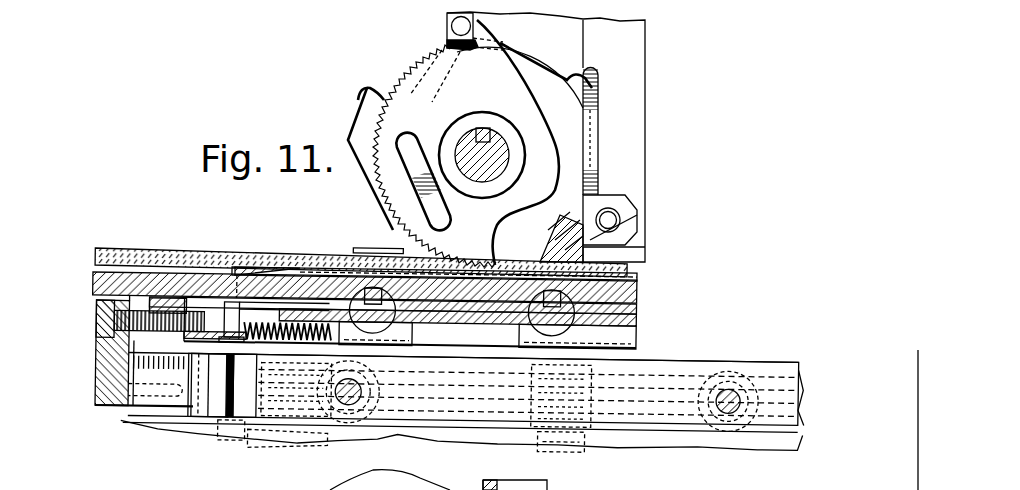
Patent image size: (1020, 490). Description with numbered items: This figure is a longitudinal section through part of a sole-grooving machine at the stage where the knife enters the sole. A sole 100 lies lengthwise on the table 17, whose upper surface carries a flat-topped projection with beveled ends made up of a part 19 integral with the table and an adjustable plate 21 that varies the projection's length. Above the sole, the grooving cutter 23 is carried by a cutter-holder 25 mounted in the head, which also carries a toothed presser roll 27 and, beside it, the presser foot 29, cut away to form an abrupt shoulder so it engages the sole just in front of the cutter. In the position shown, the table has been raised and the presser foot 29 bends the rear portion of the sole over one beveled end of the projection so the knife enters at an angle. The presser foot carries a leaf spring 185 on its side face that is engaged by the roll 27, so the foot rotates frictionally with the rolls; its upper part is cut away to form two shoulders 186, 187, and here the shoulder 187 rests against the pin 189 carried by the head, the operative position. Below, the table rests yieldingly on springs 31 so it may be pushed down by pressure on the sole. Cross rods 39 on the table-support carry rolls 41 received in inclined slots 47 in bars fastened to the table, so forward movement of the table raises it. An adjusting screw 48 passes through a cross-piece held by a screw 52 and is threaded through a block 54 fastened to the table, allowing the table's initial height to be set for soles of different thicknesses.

The table 17 is at (93, 277).
The part of projection integral with the table 19 is at (290, 277).
The adjustable plate 21 is at (350, 276).
The grooving cutter 23 is at (553, 226).
The cutter-holder 25 is at (638, 152).
The toothed presser roll 27 is at (395, 92).
The presser foot 29 is at (540, 142).
The springs 31 is at (593, 447).
The cross rods 39 is at (363, 392).
The rolls 41 is at (367, 385).
The inclined slots 47 is at (390, 405).
The adjusting screw 48 is at (97, 308).
The screw 52 is at (103, 377).
The block 54 is at (168, 306).
The sole 100 is at (150, 250).
The leaf spring 185 is at (405, 150).
The shoulder 186 is at (372, 90).
The shoulder 187 is at (458, 50).
The pin 189 is at (452, 24).